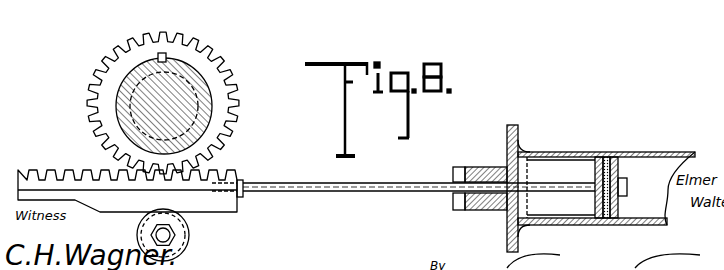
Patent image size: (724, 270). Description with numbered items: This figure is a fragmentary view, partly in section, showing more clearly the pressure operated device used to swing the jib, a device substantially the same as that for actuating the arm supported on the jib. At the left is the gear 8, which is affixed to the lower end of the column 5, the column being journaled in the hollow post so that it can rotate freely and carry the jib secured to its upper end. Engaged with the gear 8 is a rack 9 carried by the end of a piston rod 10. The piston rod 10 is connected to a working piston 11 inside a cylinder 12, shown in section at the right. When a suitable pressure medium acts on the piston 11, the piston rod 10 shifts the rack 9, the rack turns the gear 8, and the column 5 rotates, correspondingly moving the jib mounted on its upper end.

The column 5 is at (198, 82).
The gear 8 is at (215, 127).
The rack 9 is at (207, 200).
The piston rod 10 is at (337, 186).
The working piston 11 is at (650, 177).
The cylinder 12 is at (672, 146).